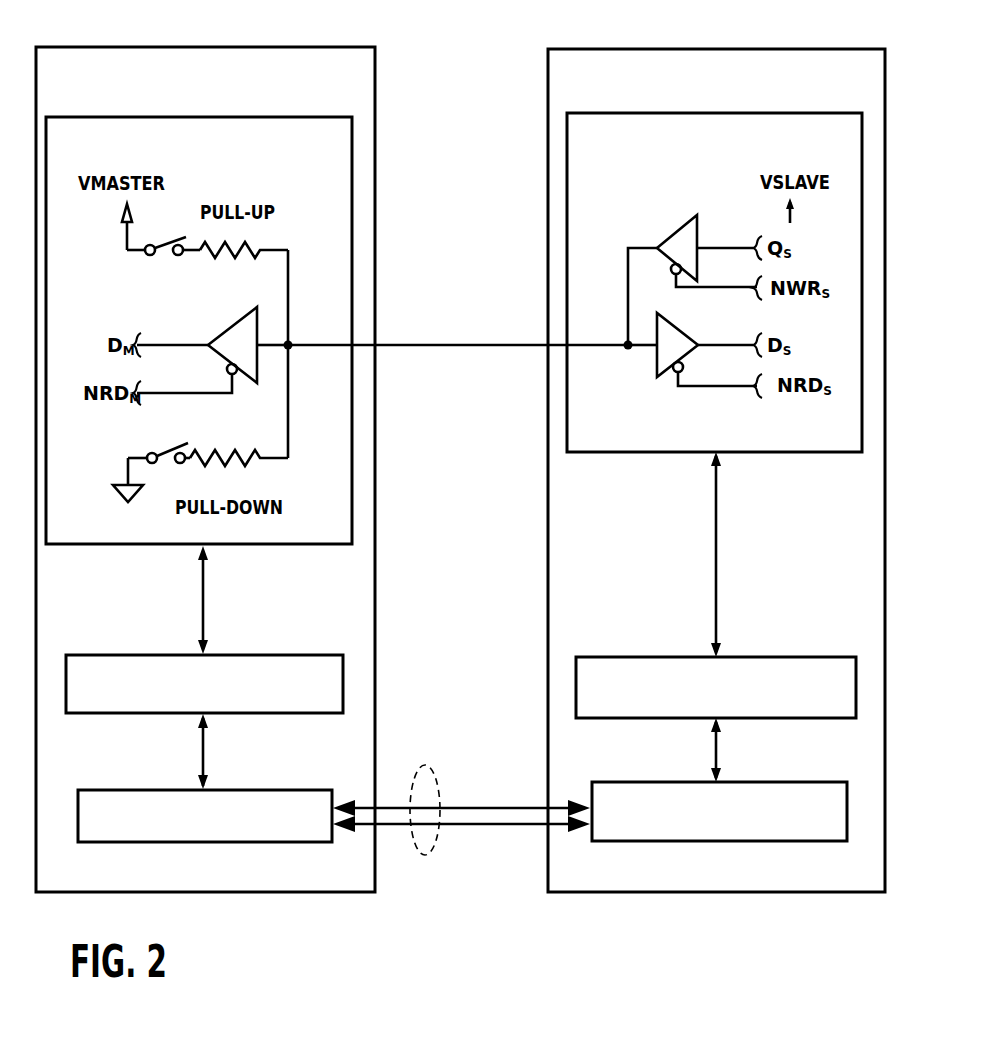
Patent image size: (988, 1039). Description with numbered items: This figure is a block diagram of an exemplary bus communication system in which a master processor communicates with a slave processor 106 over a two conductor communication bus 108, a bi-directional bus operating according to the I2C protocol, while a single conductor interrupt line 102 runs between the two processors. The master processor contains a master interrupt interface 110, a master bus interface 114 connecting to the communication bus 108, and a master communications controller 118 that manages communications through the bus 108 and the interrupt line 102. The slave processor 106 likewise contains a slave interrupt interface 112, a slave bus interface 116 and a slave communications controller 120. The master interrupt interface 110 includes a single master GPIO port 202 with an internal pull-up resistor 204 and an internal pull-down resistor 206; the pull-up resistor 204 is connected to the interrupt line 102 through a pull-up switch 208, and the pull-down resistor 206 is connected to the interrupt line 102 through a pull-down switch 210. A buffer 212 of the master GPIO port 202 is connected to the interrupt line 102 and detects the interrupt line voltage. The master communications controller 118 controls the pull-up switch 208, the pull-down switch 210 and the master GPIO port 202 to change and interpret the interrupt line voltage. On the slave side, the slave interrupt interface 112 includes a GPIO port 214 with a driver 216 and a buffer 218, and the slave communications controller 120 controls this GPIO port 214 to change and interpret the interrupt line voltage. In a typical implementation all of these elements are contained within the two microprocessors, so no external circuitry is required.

The interrupt line 102 is at (267, 47).
The slave processor 106 is at (767, 49).
The two conductor communication bus 108 is at (430, 763).
The master interrupt interface 110 is at (198, 117).
The slave interrupt interface 112 is at (715, 113).
The master bus interface 114 is at (235, 790).
The slave bus interface 116 is at (760, 782).
The master communications controller 118 is at (238, 655).
The slave communications controller 120 is at (759, 657).
The master GPIO port 202 is at (270, 318).
The pull-up resistor 204 is at (247, 242).
The pull-down resistor 206 is at (237, 468).
The pull-up switch 208 is at (176, 210).
The pull-down switch 210 is at (135, 441).
The buffer 212 is at (225, 332).
The GPIO port 214 is at (606, 280).
The driver 216 is at (680, 230).
The buffer 218 is at (658, 360).